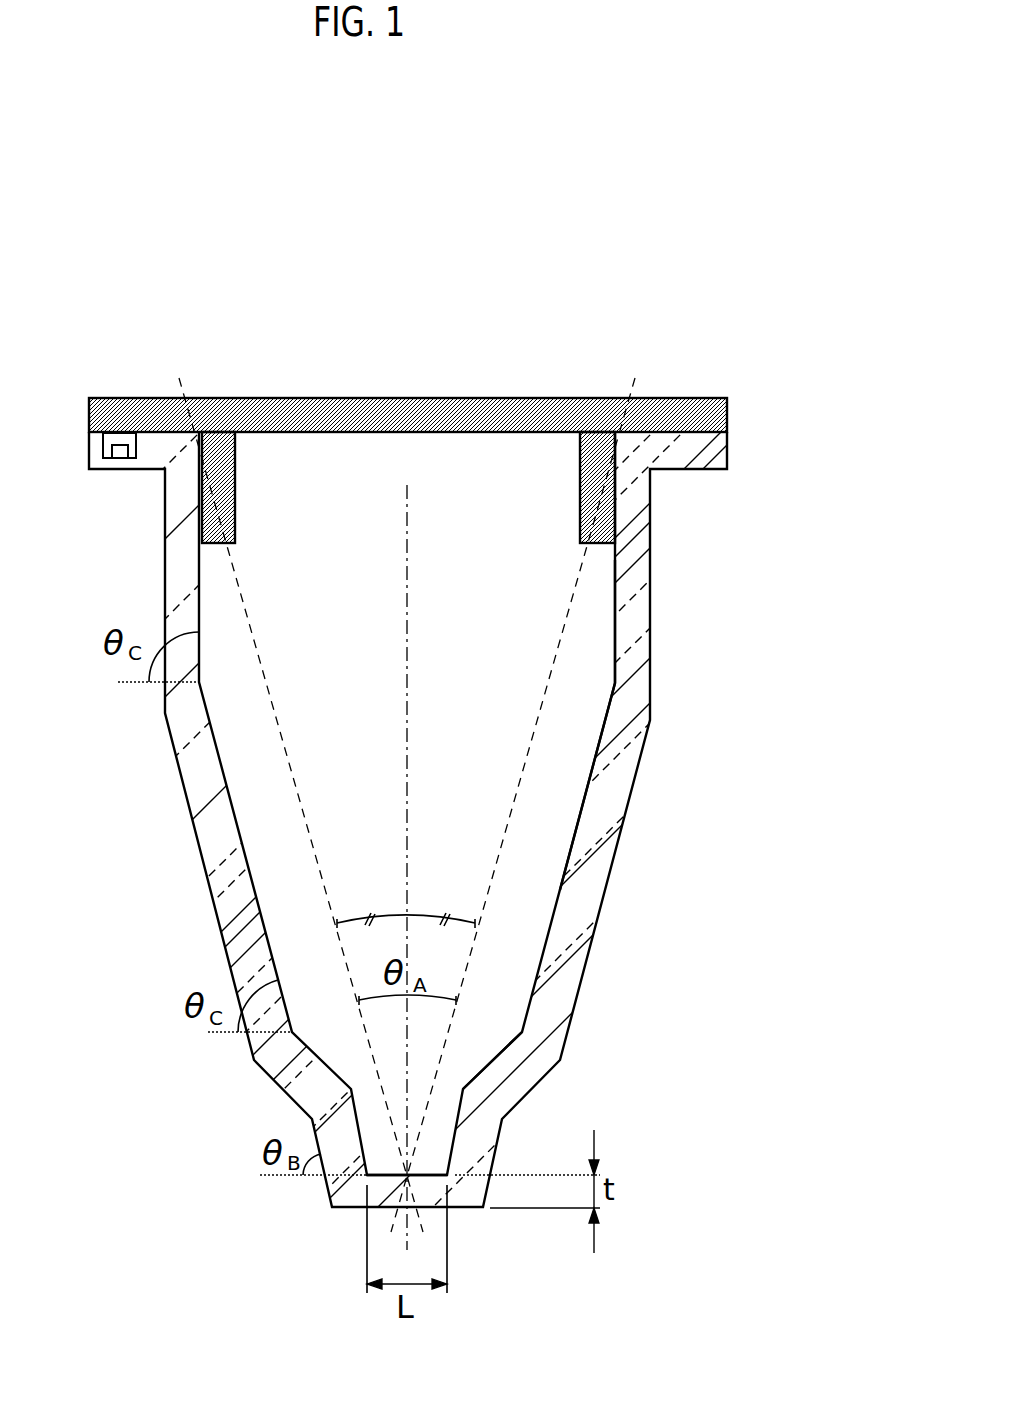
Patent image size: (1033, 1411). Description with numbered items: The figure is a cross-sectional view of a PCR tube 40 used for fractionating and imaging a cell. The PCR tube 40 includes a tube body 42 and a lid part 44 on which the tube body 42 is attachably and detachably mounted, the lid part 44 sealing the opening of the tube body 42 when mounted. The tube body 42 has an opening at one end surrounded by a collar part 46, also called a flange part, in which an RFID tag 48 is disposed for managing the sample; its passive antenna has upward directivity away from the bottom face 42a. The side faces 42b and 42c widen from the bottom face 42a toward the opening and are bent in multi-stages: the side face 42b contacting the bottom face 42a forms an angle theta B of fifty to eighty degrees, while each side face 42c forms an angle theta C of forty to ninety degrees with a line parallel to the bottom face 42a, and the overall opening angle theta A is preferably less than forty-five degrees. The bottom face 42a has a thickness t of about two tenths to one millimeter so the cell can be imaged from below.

The PCR tube 40 is at (695, 258).
The tube body 42 is at (605, 877).
The bottom face 42a is at (428, 1170).
The side face in contact with the bottom face 42b is at (458, 1108).
The side face 42c is at (617, 623).
The lid part 44 is at (407, 397).
The collar part 46 is at (95, 451).
The RFID tag 48 is at (118, 458).